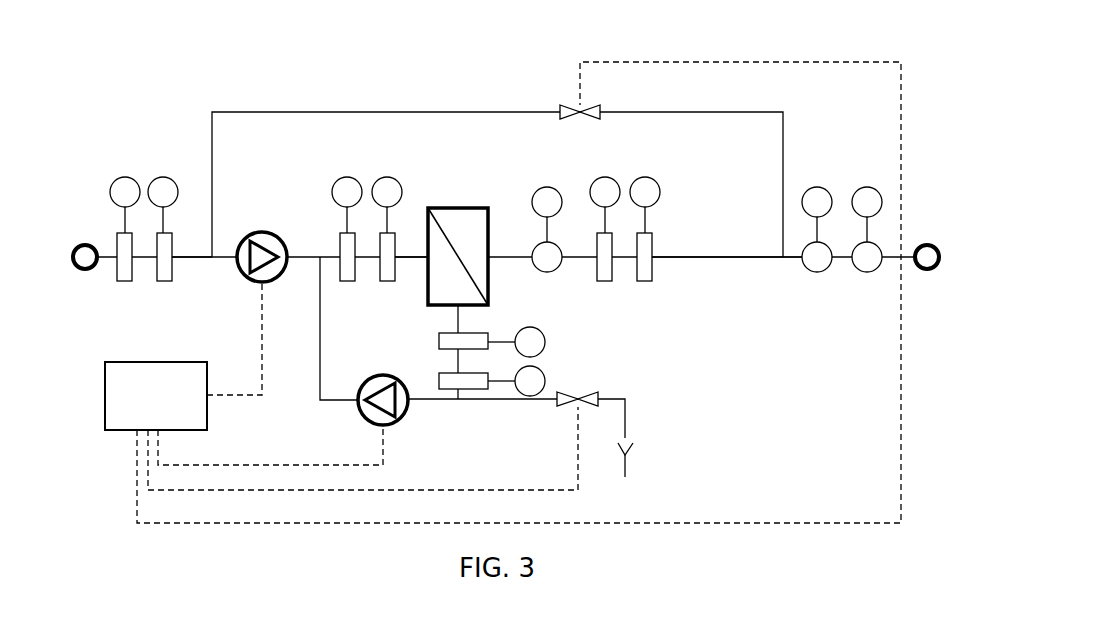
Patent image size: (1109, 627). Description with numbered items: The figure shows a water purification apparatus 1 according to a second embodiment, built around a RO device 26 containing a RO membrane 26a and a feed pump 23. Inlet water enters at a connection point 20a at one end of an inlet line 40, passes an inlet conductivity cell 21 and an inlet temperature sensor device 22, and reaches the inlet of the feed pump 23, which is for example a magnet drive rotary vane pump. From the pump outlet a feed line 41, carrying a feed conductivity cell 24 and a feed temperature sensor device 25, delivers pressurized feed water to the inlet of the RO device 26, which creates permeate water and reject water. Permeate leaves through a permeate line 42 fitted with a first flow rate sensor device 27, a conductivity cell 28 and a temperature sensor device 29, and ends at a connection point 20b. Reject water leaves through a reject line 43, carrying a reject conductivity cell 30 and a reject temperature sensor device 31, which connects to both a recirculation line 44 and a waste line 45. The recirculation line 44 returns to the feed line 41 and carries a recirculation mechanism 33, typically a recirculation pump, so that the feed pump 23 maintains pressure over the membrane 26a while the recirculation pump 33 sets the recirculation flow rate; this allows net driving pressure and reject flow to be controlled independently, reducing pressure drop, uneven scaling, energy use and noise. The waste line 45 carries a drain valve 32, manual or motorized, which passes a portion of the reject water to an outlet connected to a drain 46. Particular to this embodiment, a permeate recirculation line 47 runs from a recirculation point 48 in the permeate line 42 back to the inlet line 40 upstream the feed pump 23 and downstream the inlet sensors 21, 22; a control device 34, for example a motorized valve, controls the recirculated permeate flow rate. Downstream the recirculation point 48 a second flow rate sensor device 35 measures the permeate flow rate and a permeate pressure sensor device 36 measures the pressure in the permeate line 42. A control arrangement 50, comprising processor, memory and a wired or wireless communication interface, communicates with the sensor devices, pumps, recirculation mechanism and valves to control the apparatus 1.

The water purification apparatus 1 is at (236, 81).
The connection point 20a is at (95, 266).
The connection point 20b is at (928, 270).
The inlet conductivity cell 21 is at (117, 238).
The inlet temperature sensor device 22 is at (157, 282).
The feed pump 23 is at (272, 233).
The feed conductivity cell 24 is at (340, 245).
The feed temperature sensor device 25 is at (395, 243).
The RO device 26 is at (487, 207).
The RO membrane 26a is at (447, 230).
The first flow rate sensor device 27 is at (535, 270).
The conductivity cell 28 is at (603, 282).
The temperature sensor device 29 is at (643, 282).
The reject conductivity cell 30 is at (439, 336).
The reject temperature sensor device 31 is at (439, 376).
The drain valve 32 is at (560, 403).
The recirculation mechanism 33 is at (358, 410).
The control device 34 is at (575, 108).
The second flow rate sensor device 35 is at (805, 270).
The permeate pressure sensor device 36 is at (855, 270).
The inlet line 40 is at (193, 260).
The feed line 41 is at (415, 262).
The permeate line 42 is at (675, 257).
The reject line 43 is at (458, 322).
The recirculation line 44 is at (322, 338).
The waste line 45 is at (510, 399).
The drain 46 is at (628, 466).
The permeate recirculation line 47 is at (783, 140).
The recirculation point 48 is at (775, 252).
The control arrangement 50 is at (503, 292).